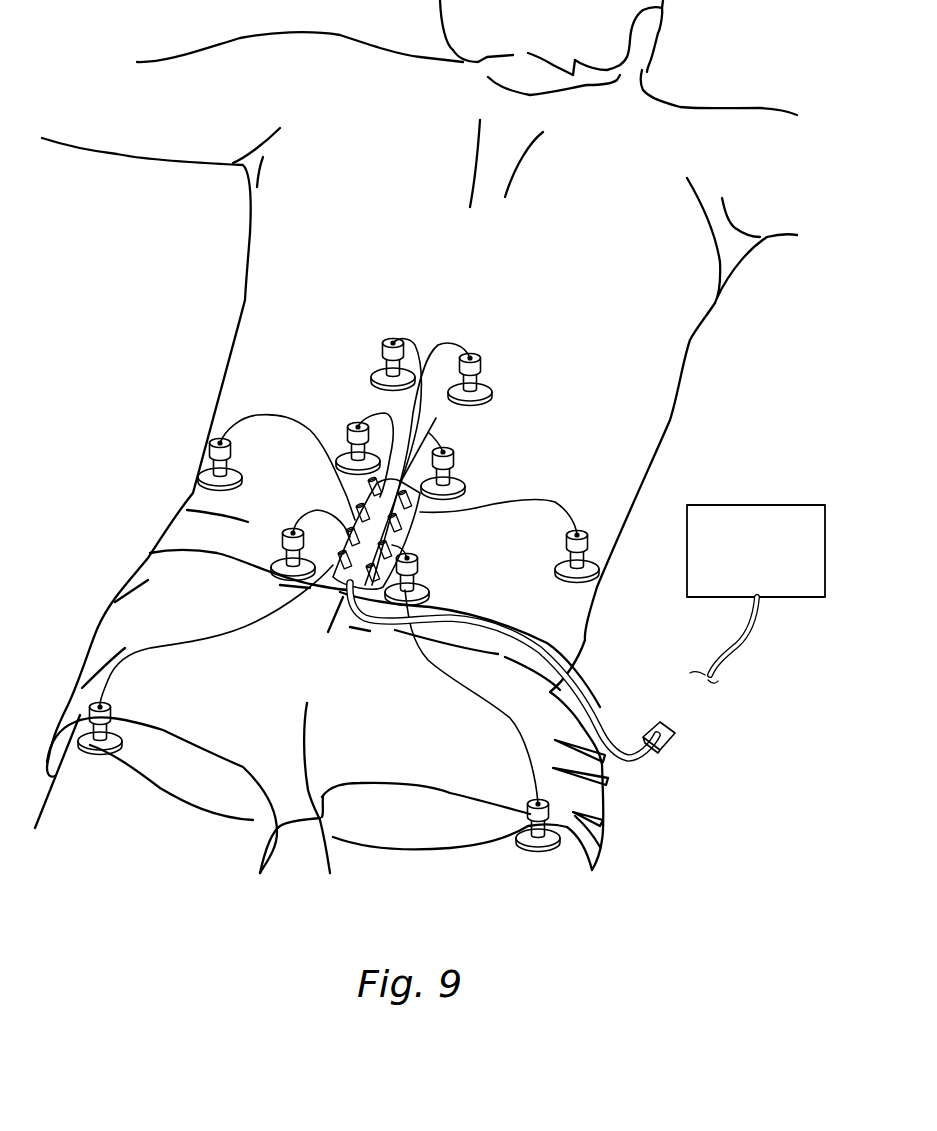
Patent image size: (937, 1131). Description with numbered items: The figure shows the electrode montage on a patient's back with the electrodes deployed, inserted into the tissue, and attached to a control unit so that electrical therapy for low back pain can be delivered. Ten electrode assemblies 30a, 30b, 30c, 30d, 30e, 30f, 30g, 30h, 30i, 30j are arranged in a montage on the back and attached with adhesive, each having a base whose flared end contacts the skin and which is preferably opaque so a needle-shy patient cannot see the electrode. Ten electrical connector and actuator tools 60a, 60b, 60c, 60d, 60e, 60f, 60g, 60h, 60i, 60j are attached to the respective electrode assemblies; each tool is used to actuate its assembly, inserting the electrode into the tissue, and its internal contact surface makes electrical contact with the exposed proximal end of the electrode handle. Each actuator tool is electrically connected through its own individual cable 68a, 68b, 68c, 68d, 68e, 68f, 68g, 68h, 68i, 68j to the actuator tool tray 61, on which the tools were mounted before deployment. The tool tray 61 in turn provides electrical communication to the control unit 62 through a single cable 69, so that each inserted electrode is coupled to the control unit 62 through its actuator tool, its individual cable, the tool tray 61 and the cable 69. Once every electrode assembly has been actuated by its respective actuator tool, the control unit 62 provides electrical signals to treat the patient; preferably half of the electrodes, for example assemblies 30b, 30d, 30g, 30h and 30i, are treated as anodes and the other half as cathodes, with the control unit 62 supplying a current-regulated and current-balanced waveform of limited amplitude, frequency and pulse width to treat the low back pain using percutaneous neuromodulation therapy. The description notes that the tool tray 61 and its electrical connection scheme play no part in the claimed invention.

The electrode assembly 30a is at (378, 368).
The electrode assembly 30b is at (487, 389).
The electrode assembly 30c is at (247, 477).
The electrode assembly 30d is at (346, 458).
The electrode assembly 30e is at (462, 484).
The electrode assembly 30f is at (273, 563).
The electrode assembly 30g is at (433, 587).
The electrode assembly 30h is at (560, 563).
The electrode assembly 30i is at (101, 748).
The electrode assembly 30j is at (519, 845).
The actuator tool 60a is at (384, 344).
The actuator tool 60b is at (480, 352).
The actuator tool 60c is at (229, 443).
The actuator tool 60d is at (354, 422).
The actuator tool 60e is at (455, 456).
The actuator tool 60f is at (283, 533).
The actuator tool 60g is at (418, 560).
The actuator tool 60h is at (582, 533).
The actuator tool 60i is at (110, 708).
The actuator tool 60j is at (531, 797).
The individual cable 68a is at (413, 340).
The individual cable 68b is at (455, 339).
The individual cable 68c is at (273, 414).
The individual cable 68d is at (373, 409).
The individual cable 68e is at (437, 440).
The individual cable 68f is at (317, 508).
The individual cable 68g is at (410, 553).
The individual cable 68h is at (553, 500).
The individual cable 68i is at (238, 640).
The individual cable 68j is at (497, 708).
The actuator tool tray 61 is at (416, 516).
The control unit 62 is at (756, 594).
The cable 69 is at (612, 722).